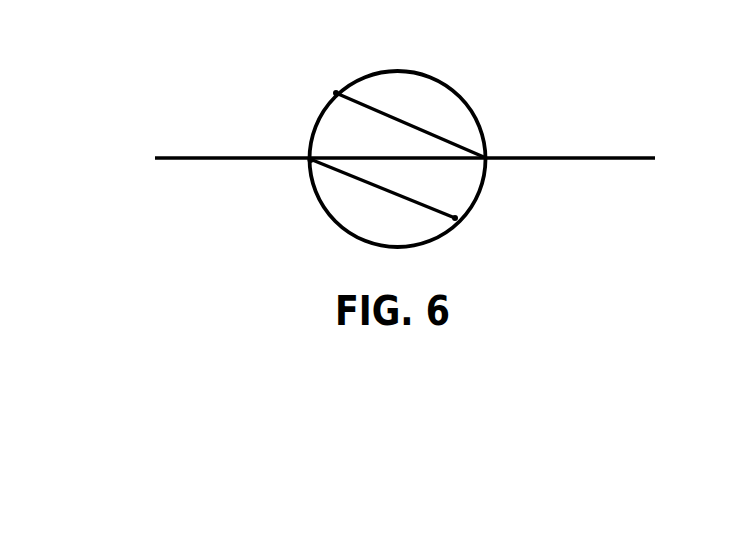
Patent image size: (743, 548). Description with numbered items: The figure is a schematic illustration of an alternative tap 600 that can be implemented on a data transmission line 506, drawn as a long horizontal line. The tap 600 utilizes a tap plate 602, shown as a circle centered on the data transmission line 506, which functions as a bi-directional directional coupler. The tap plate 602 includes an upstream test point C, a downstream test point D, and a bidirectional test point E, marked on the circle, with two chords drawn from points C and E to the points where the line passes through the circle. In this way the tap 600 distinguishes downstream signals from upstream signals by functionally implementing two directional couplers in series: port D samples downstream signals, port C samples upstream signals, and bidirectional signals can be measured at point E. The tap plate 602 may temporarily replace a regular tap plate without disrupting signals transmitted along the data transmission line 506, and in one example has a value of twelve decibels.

The tap 600 is at (586, 114).
The data transmission line 506 is at (598, 159).
The tap plate 602 is at (460, 93).